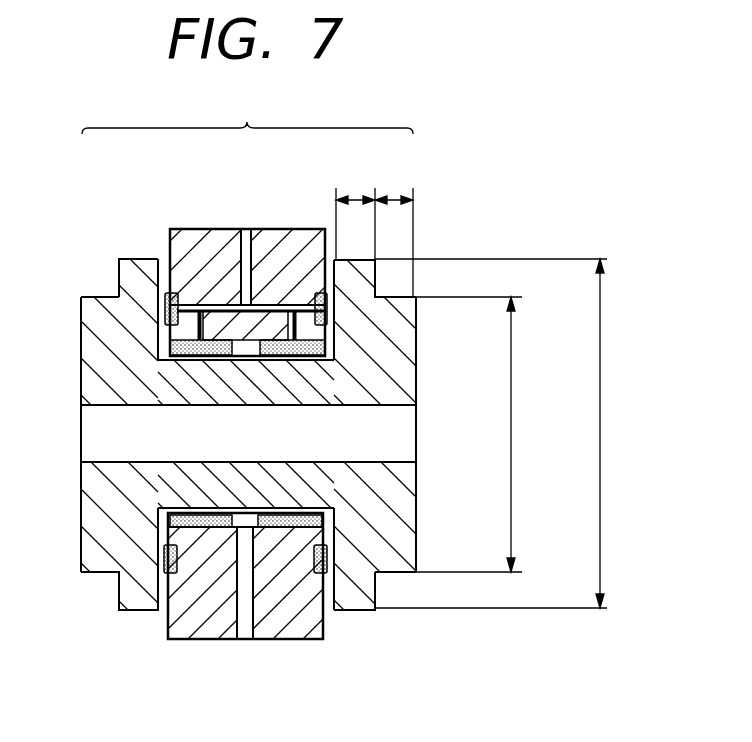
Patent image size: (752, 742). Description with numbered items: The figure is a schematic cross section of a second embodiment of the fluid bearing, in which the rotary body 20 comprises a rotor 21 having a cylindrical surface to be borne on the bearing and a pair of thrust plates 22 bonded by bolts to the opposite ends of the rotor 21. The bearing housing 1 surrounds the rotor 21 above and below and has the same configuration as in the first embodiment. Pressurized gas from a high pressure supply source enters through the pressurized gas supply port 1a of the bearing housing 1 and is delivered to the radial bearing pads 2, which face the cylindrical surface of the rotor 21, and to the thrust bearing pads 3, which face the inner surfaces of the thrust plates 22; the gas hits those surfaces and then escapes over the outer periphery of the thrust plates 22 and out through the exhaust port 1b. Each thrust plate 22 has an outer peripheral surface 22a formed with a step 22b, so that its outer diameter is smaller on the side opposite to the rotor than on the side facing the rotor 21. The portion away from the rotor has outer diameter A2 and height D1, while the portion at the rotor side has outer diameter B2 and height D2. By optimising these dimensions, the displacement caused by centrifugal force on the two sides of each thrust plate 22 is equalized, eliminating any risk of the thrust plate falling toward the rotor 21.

The rotary body 20 is at (260, 115).
The bearing housing 1 is at (246, 434).
The pressurized gas supply port 1a is at (248, 240).
The exhaust port 1b is at (245, 640).
The radial bearing pad 2 is at (192, 520).
The thrust bearing pad 3 is at (163, 556).
The rotor 21 is at (192, 385).
The thrust plate 22 is at (90, 343).
The outer peripheral surface 22a is at (141, 258).
The step 22b is at (119, 280).
The height of the part of the thrust plate opposite the rotor D1 is at (393, 197).
The height of the part of the thrust plate at the rotor side D2 is at (357, 197).
The outer diameter of the part of the thrust plate opposite the rotor A2 is at (513, 430).
The outer diameter of the part of the thrust plate at the rotor side B2 is at (603, 430).